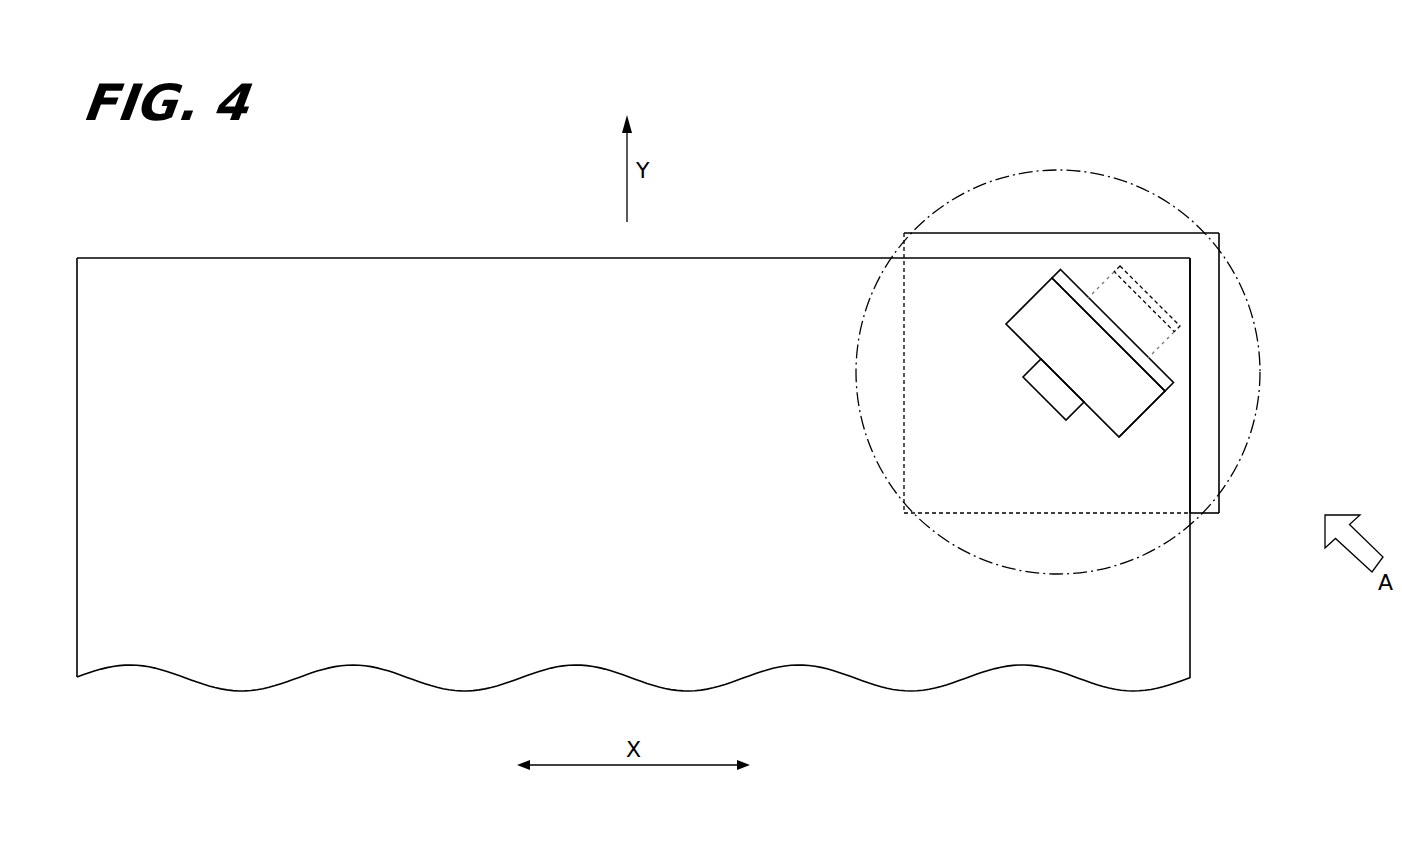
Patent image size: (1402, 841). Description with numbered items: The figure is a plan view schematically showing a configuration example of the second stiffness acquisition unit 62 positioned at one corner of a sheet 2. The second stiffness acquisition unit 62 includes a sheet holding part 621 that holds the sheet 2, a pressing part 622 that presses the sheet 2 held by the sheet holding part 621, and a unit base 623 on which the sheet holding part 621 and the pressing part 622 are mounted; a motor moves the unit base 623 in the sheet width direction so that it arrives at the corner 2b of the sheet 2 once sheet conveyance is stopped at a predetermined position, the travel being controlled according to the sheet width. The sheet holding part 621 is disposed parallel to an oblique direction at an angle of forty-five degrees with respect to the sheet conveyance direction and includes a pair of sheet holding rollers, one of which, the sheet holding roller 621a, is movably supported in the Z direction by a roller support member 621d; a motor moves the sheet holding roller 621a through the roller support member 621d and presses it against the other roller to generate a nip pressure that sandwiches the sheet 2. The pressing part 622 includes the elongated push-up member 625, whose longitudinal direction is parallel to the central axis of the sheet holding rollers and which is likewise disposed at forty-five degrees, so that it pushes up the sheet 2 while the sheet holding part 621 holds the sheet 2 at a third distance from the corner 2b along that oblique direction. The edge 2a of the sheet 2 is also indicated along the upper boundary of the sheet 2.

The sheet 2 is at (395, 282).
The leading edge of medium 2a is at (531, 242).
The corner of the sheet 2b is at (1197, 240).
The second stiffness acquisition unit 62 is at (1056, 127).
The sheet holding part 621 is at (1022, 270).
The sheet holding roller 621a is at (1175, 395).
The roller support member 621d is at (1137, 427).
The pressing part 622 is at (1180, 341).
The unit base 623 is at (1220, 443).
The push-up member 625 is at (1164, 318).